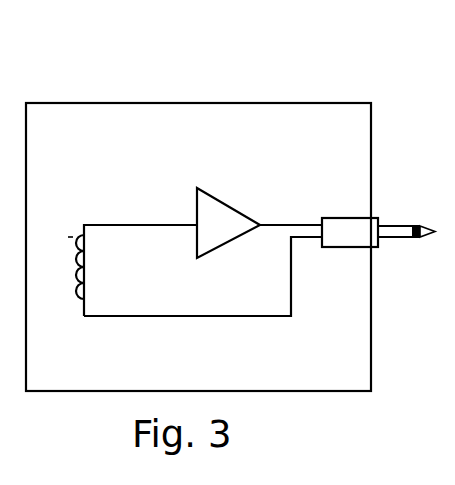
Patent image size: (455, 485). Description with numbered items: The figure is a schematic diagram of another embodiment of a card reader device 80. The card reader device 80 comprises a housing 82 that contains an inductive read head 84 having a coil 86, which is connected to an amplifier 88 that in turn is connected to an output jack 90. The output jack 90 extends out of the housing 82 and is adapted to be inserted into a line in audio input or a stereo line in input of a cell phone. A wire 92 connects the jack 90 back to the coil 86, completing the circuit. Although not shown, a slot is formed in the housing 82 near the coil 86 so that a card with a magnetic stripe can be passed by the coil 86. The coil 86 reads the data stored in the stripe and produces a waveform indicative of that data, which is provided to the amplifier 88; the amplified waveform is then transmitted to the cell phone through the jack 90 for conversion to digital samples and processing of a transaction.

The card reader device 80 is at (198, 91).
The housing 82 is at (333, 102).
The inductive read head 84 is at (89, 212).
The coil 86 is at (88, 264).
The amplifier 88 is at (231, 205).
The output jack 90 is at (338, 216).
The wire 92 is at (167, 317).